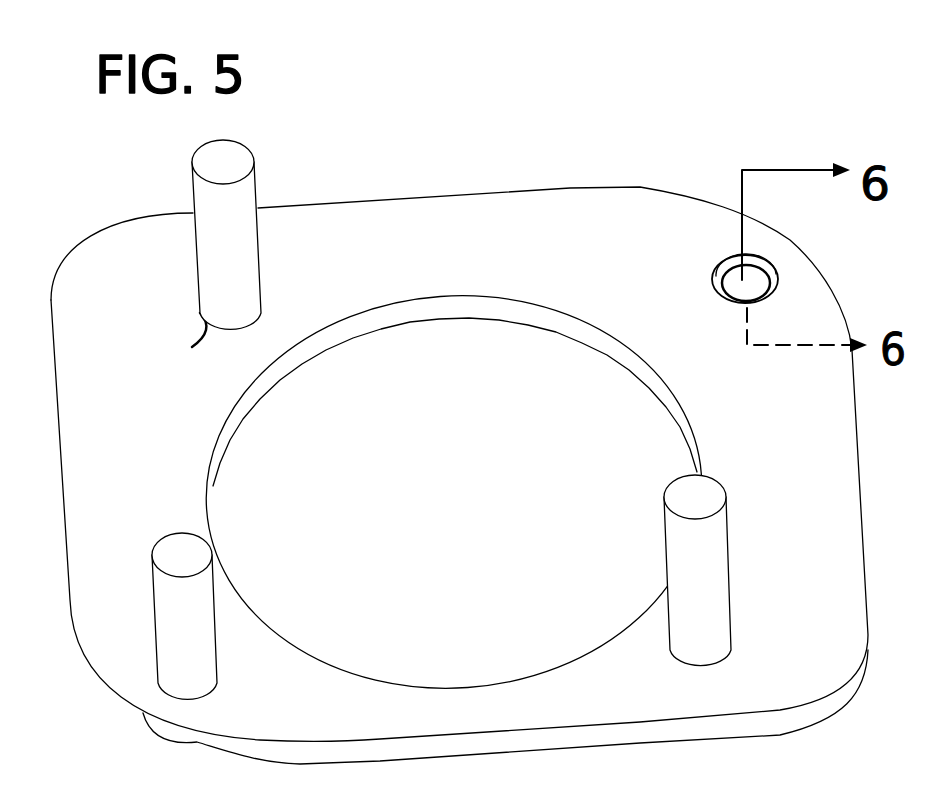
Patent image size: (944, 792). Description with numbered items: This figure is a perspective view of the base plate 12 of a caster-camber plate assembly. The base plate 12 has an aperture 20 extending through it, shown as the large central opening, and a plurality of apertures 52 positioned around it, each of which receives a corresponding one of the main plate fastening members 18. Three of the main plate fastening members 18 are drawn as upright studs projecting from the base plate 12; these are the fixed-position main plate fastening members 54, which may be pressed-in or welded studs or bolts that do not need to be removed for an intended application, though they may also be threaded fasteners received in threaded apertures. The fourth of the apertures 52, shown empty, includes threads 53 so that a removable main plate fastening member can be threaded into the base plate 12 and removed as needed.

The base plate 12 is at (401, 206).
The main plate fastening members 18 is at (217, 150).
The aperture 20 is at (398, 318).
The apertures 52 is at (712, 280).
The threads 53 is at (733, 300).
The fixed-position main plate fastening members 54 is at (250, 187).